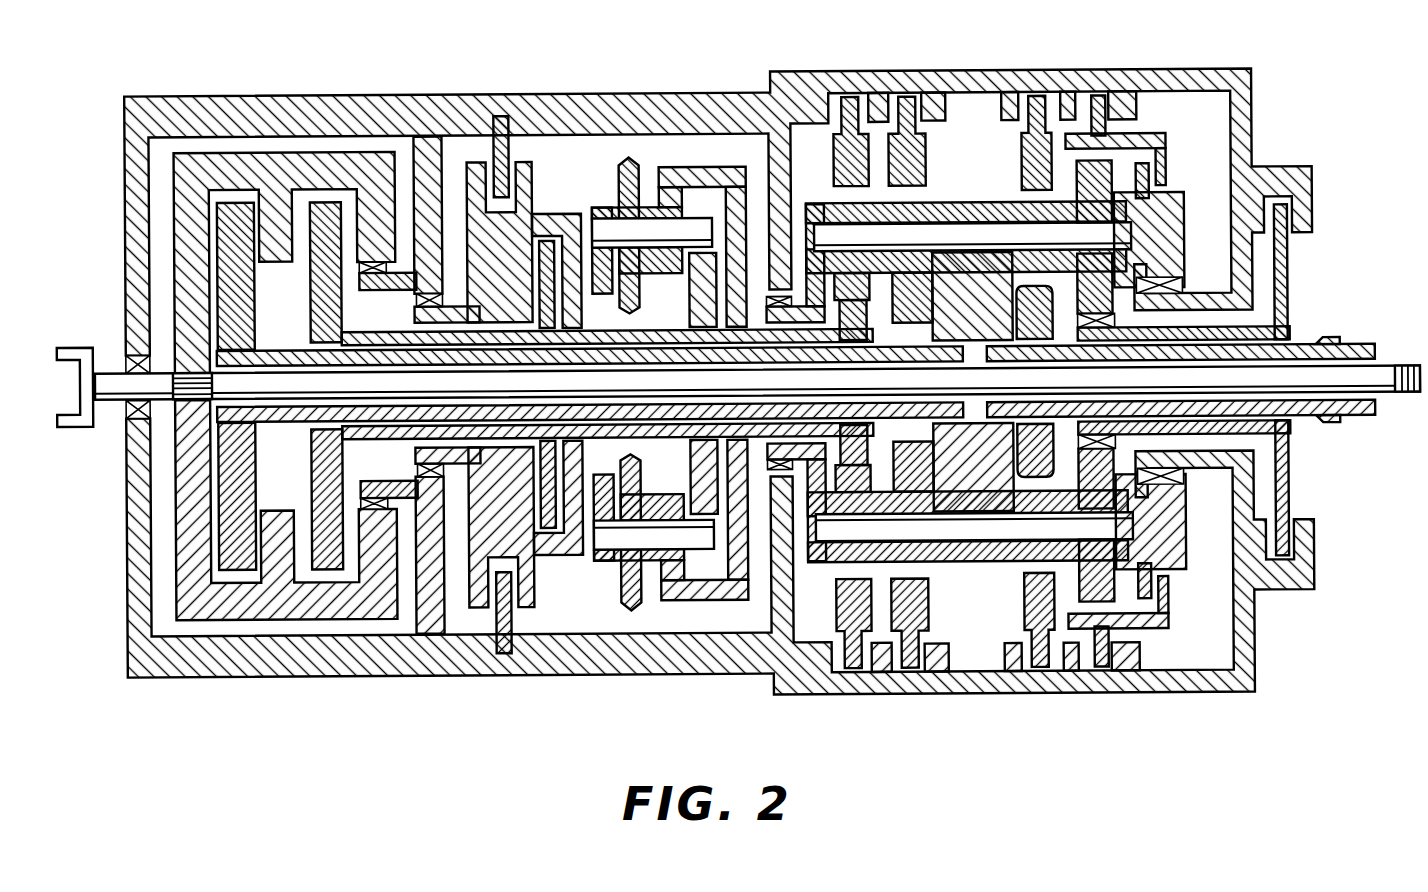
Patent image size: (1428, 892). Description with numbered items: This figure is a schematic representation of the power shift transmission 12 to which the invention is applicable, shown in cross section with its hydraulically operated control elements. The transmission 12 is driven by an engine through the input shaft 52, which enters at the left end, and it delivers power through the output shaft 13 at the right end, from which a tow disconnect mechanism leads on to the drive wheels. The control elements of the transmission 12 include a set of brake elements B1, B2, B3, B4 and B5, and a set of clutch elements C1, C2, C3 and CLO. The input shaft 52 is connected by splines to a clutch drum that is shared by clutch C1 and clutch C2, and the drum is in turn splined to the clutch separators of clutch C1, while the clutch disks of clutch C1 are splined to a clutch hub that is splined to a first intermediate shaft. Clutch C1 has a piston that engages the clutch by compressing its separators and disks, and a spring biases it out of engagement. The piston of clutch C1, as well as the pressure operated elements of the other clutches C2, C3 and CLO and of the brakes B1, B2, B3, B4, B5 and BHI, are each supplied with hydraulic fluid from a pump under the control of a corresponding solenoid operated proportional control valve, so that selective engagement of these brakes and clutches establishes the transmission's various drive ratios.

The power shift transmission 12 is at (1288, 50).
The output shaft 13 is at (1300, 346).
The input shaft 52 is at (116, 346).
The first clutch C1 is at (243, 198).
The second clutch C2 is at (331, 198).
The third clutch C3 is at (1196, 176).
The high brake element BHI is at (488, 145).
The low clutch element CLO is at (551, 241).
The first brake element B1 is at (852, 100).
The second brake element B2 is at (910, 100).
The third brake element B3 is at (1038, 100).
The fourth brake element B4 is at (1100, 100).
The fifth brake element B5 is at (1281, 206).